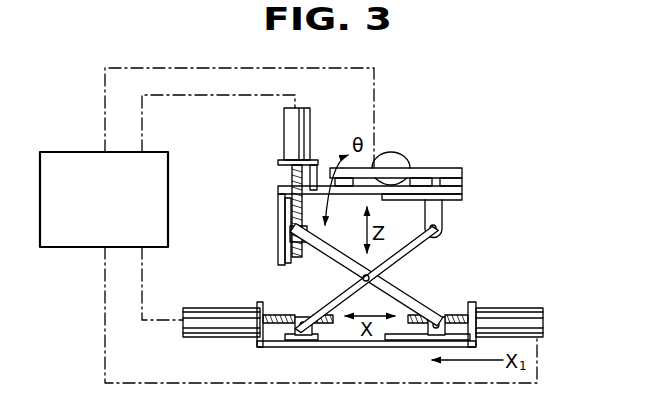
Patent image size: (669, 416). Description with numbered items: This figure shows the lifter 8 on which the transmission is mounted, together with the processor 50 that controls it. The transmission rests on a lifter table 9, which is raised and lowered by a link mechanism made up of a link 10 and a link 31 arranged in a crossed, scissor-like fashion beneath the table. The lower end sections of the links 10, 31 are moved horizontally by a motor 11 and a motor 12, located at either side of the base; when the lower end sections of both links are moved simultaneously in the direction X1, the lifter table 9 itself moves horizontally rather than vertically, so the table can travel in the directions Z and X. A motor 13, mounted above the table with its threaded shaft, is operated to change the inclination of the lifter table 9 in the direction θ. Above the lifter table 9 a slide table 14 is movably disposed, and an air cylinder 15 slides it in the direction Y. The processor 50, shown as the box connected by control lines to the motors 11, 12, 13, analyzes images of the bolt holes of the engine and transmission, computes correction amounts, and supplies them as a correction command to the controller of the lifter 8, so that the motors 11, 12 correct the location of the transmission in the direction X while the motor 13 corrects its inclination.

The lifter 8 is at (457, 242).
The lifter table 9 is at (418, 186).
The link 10 is at (408, 298).
The motor 11 is at (519, 320).
The motor 12 is at (207, 316).
The motor 13 is at (290, 122).
The slide table 14 is at (452, 168).
The air cylinder 15 is at (391, 153).
The link 31 is at (332, 299).
The processor 50 is at (168, 202).